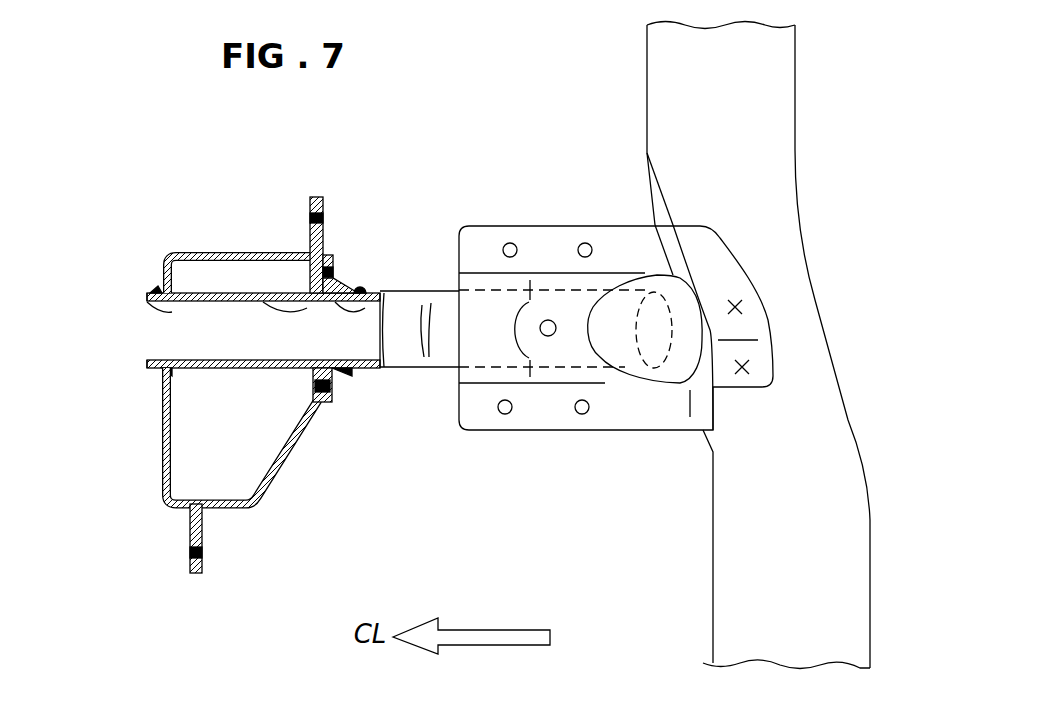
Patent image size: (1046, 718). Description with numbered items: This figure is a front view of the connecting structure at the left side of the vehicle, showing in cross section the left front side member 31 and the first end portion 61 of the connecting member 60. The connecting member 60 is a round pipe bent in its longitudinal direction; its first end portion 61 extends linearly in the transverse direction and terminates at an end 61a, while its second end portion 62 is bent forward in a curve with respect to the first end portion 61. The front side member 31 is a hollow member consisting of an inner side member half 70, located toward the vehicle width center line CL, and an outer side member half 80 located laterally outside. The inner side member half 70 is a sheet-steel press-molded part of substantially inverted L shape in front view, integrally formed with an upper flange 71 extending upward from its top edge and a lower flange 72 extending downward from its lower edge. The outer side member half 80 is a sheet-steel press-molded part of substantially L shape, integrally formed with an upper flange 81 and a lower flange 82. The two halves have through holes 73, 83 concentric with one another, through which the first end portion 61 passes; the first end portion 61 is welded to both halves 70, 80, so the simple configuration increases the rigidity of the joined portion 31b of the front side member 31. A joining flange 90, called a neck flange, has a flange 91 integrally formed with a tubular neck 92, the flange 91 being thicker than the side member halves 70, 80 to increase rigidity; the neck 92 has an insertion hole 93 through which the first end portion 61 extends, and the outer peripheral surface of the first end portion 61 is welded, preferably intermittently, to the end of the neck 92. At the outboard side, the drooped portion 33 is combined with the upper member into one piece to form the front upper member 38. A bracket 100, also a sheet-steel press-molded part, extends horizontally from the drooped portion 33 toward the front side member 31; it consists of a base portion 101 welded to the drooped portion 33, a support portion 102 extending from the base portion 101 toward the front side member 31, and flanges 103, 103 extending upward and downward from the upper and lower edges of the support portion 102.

The front side member 31 is at (188, 370).
The joined portion 31b is at (207, 296).
The drooped portion 33 is at (775, 345).
The front upper member 38 is at (797, 60).
The connecting member 60 is at (393, 373).
The first end portion 61 is at (223, 370).
The end of the first end portion 61a is at (147, 323).
The second end portion 62 is at (556, 370).
The inner side member half 70 is at (162, 425).
The upper flange 71 is at (310, 210).
The lower flange 72 is at (188, 558).
The through hole 73 is at (150, 300).
The outer side member half 80 is at (270, 464).
The upper flange 81 is at (323, 205).
The lower flange 82 is at (202, 558).
The through hole 83 is at (263, 302).
The joining flange 90 is at (422, 227).
The flange 91 is at (348, 281).
The neck 92 is at (365, 293).
The insertion hole 93 is at (375, 292).
The bracket 100 is at (677, 327).
The base portion 101 is at (732, 250).
The support portion 102 is at (680, 332).
The flanges 103 is at (562, 240).